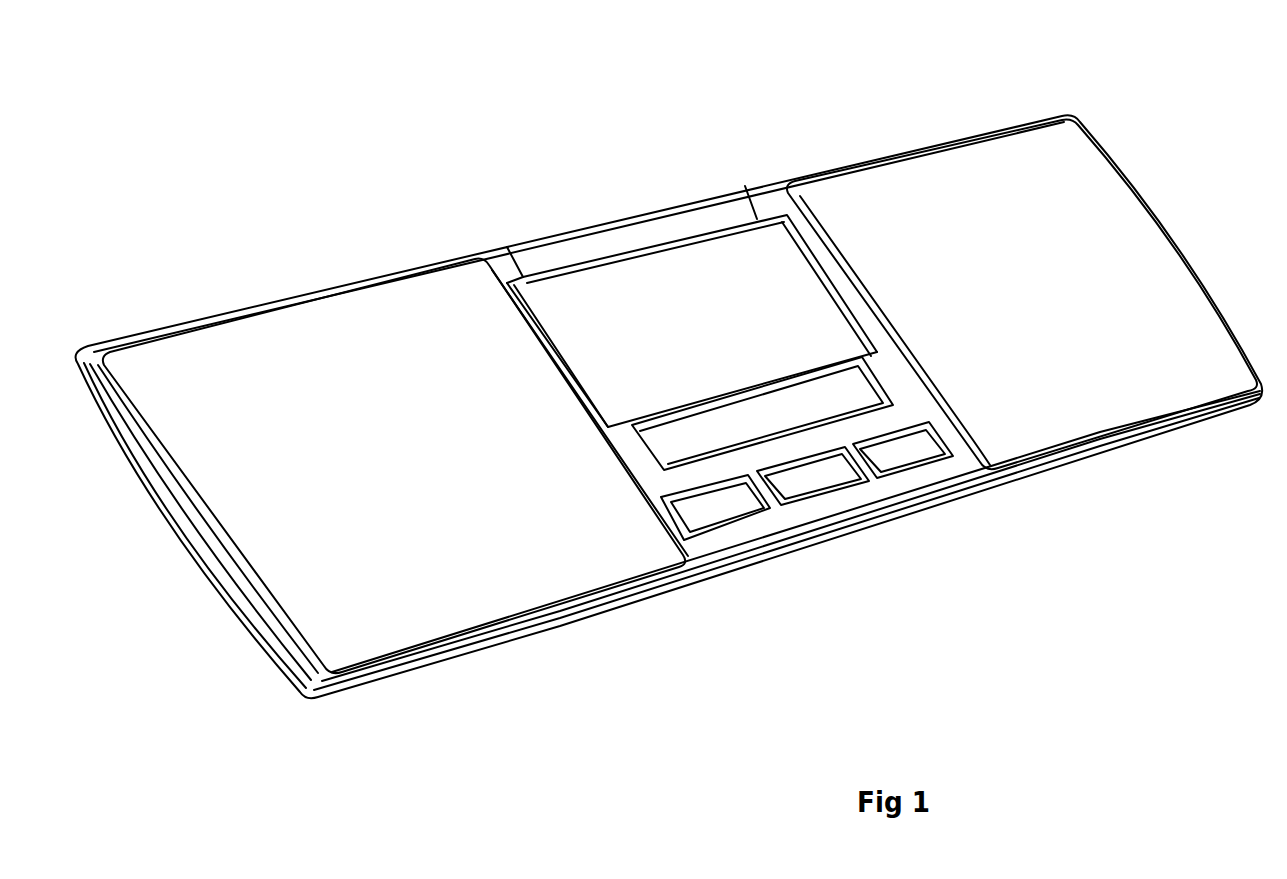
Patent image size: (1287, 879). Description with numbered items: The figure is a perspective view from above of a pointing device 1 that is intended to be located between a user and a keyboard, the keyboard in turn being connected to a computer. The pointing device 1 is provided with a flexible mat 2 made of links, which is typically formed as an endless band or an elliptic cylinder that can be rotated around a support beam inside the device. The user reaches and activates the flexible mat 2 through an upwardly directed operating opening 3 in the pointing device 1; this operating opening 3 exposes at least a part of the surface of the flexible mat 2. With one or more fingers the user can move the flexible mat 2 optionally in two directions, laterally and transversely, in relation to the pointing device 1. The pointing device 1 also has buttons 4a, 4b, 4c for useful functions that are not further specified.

The pointing device 1 is at (388, 222).
The flexible mat 2 is at (682, 290).
The operating opening 3 is at (827, 280).
The button 4a is at (715, 508).
The button 4b is at (808, 477).
The button 4c is at (902, 453).